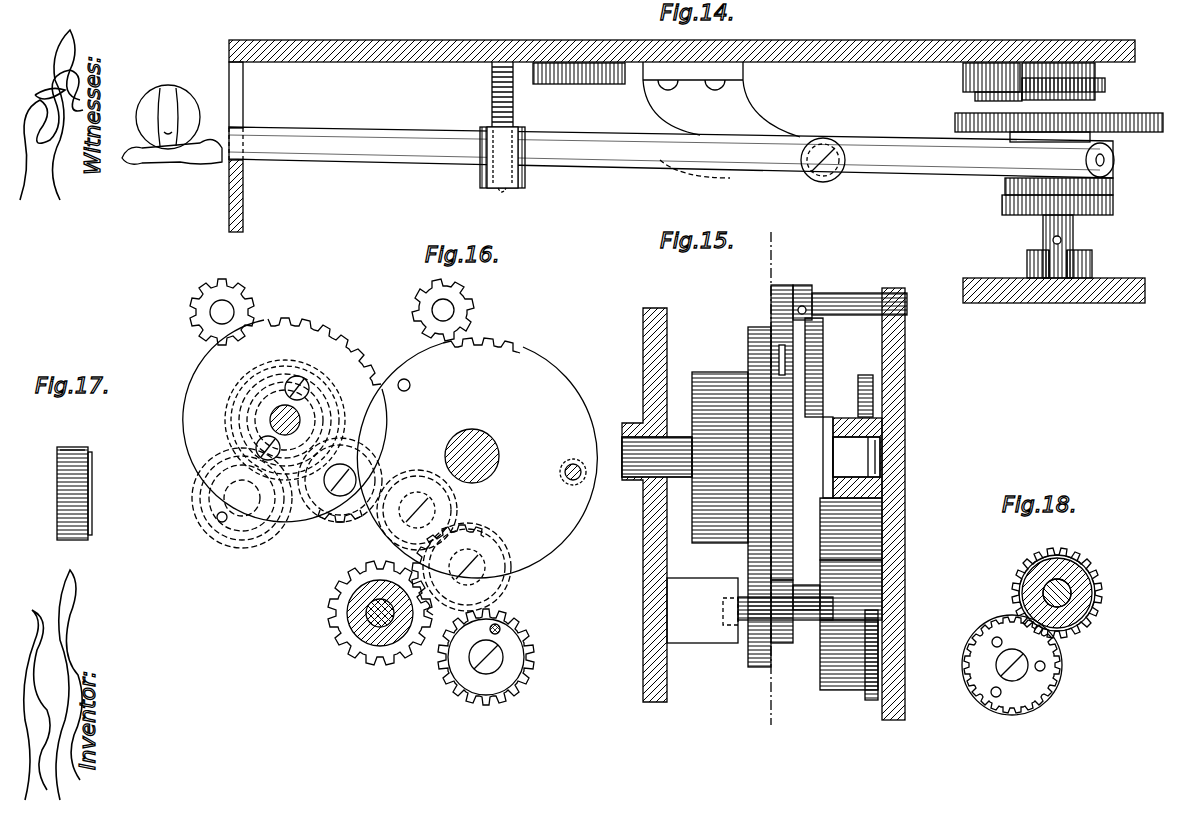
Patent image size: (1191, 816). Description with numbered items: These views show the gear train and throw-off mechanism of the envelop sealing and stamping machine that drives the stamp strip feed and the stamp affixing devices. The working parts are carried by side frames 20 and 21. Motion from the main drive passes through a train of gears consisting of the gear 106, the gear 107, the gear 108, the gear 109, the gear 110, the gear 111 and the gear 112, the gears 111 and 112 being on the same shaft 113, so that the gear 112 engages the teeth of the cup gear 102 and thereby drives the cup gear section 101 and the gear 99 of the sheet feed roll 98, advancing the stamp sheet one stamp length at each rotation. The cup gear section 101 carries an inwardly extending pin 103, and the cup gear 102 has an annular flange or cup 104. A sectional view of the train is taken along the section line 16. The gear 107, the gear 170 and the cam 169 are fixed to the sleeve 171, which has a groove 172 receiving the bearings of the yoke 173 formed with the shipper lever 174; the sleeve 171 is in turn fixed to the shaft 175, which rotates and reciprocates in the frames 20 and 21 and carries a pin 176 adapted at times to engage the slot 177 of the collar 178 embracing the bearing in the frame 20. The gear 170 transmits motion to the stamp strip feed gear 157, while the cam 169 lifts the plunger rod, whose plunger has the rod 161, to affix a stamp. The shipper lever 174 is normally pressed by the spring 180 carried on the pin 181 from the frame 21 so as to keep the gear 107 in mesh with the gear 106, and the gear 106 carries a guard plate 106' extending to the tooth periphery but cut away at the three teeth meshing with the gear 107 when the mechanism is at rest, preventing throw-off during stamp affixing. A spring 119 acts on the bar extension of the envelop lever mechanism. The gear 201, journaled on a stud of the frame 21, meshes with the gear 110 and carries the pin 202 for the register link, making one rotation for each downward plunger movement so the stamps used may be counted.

In FIG. 15, the section line 16 is at (781, 484).
In FIG. 14, the side frame 20 is at (1145, 290).
In FIG. 15, the side frame 20 is at (667, 688).
In FIG. 14, the side frame 21 is at (1135, 44).
In FIG. 15, the side frame 21 is at (905, 698).
In FIG. 15, the sheet feed roll 98 is at (848, 293).
In FIG. 16, the sheet feed roll 98 is at (454, 310).
In FIG. 15, the gear 99 is at (815, 275).
In FIG. 16, the gear 99 is at (465, 292).
In FIG. 14, the cup gear section 101 is at (1134, 160).
In FIG. 15, the cup gear section 101 is at (760, 360).
In FIG. 16, the cup gear section 101 is at (555, 372).
In FIG. 15, the cup gear 102 is at (782, 370).
In FIG. 14, the pin 103 is at (1090, 140).
In FIG. 15, the pin 103 is at (795, 355).
In FIG. 16, the pin 103 is at (410, 385).
In FIG. 15, the annular flange 104 is at (700, 372).
In FIG. 14, the gear 106 is at (962, 77).
In FIG. 16, the gear 106 is at (242, 507).
In FIG. 17, the gear 106 is at (96, 493).
In FIG. 18, the gear 106 is at (1038, 665).
In FIG. 16, the guard plate 106' is at (206, 539).
In FIG. 17, the guard plate 106' is at (44, 469).
In FIG. 18, the guard plate 106' is at (1053, 667).
In FIG. 14, the gear 107 is at (1095, 80).
In FIG. 15, the gear 107 is at (866, 375).
In FIG. 16, the gear 107 is at (250, 410).
In FIG. 18, the gear 107 is at (1093, 578).
In FIG. 16, the gear 108 is at (333, 520).
In FIG. 15, the gear 109 is at (878, 508).
In FIG. 16, the gear 109 is at (457, 512).
In FIG. 15, the gear 110 is at (878, 590).
In FIG. 16, the gear 110 is at (511, 585).
In FIG. 15, the gear 111 is at (822, 584).
In FIG. 16, the gear 111 is at (428, 640).
In FIG. 15, the gear 112 is at (745, 654).
In FIG. 15, the shaft 113 is at (784, 643).
In FIG. 16, the shaft 113 is at (380, 646).
In FIG. 14, the spring 119 is at (745, 100).
In FIG. 16, the gear 157 is at (247, 298).
In FIG. 14, the rod 161 is at (975, 100).
In FIG. 14, the cam 169 is at (1113, 206).
In FIG. 16, the cam 169 is at (232, 420).
In FIG. 14, the gear 170 is at (1064, 111).
In FIG. 15, the gear 170 is at (823, 338).
In FIG. 16, the gear 170 is at (225, 440).
In FIG. 14, the sleeve 171 is at (1100, 100).
In FIG. 18, the sleeve 171 is at (1095, 600).
In FIG. 14, the groove 172 is at (1112, 168).
In FIG. 14, the yoke 173 is at (1030, 165).
In FIG. 14, the shipper lever 174 is at (596, 172).
In FIG. 14, the shaft 175 is at (1073, 232).
In FIG. 18, the shaft 175 is at (1068, 560).
In FIG. 14, the pin 176 is at (1052, 240).
In FIG. 14, the slot 177 is at (1027, 260).
In FIG. 14, the collar 178 is at (1092, 260).
In FIG. 14, the spring 180 is at (513, 105).
In FIG. 14, the pin 181 is at (490, 90).
In FIG. 15, the gear 201 is at (878, 648).
In FIG. 16, the gear 201 is at (515, 660).
In FIG. 16, the pin 202 is at (500, 629).